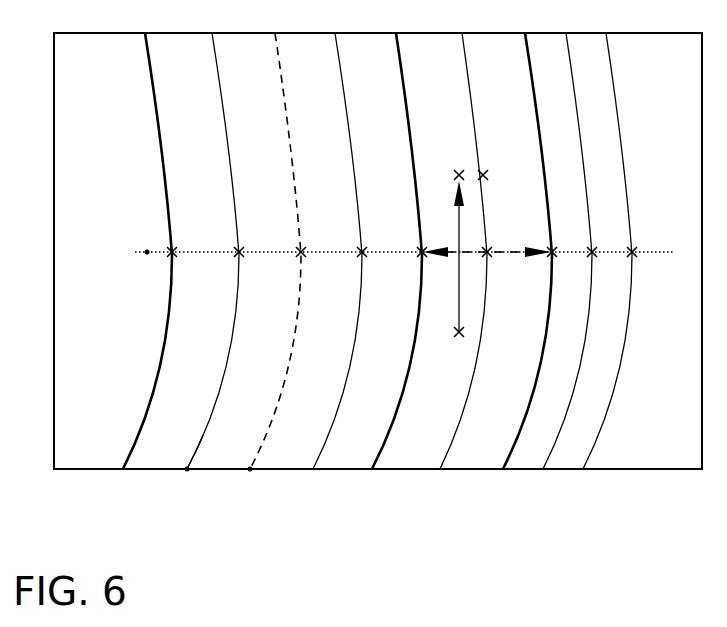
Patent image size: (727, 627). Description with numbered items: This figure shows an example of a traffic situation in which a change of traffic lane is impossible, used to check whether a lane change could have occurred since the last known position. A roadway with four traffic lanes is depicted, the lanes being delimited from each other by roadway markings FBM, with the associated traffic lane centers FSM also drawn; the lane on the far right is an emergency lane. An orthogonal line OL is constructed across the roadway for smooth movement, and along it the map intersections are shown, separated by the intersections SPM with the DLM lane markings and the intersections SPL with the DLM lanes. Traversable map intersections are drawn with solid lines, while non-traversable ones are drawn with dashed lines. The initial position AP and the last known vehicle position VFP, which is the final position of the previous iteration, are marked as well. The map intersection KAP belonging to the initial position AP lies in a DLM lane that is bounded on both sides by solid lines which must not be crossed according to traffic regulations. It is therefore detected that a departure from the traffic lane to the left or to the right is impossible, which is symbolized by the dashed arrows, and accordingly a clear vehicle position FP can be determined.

The intersections with the DLM lane markings SPM is at (171, 250).
The orthogonal line OL is at (147, 252).
The intersections with the DLM lanes SPL is at (241, 254).
The initial position AP is at (446, 234).
The clear vehicle position FP is at (479, 251).
The map intersection belonging to the initial position KAP is at (487, 236).
The last known vehicle position VFP is at (444, 349).
The traffic lane centers FSM is at (187, 469).
The roadway markings FBM is at (250, 469).